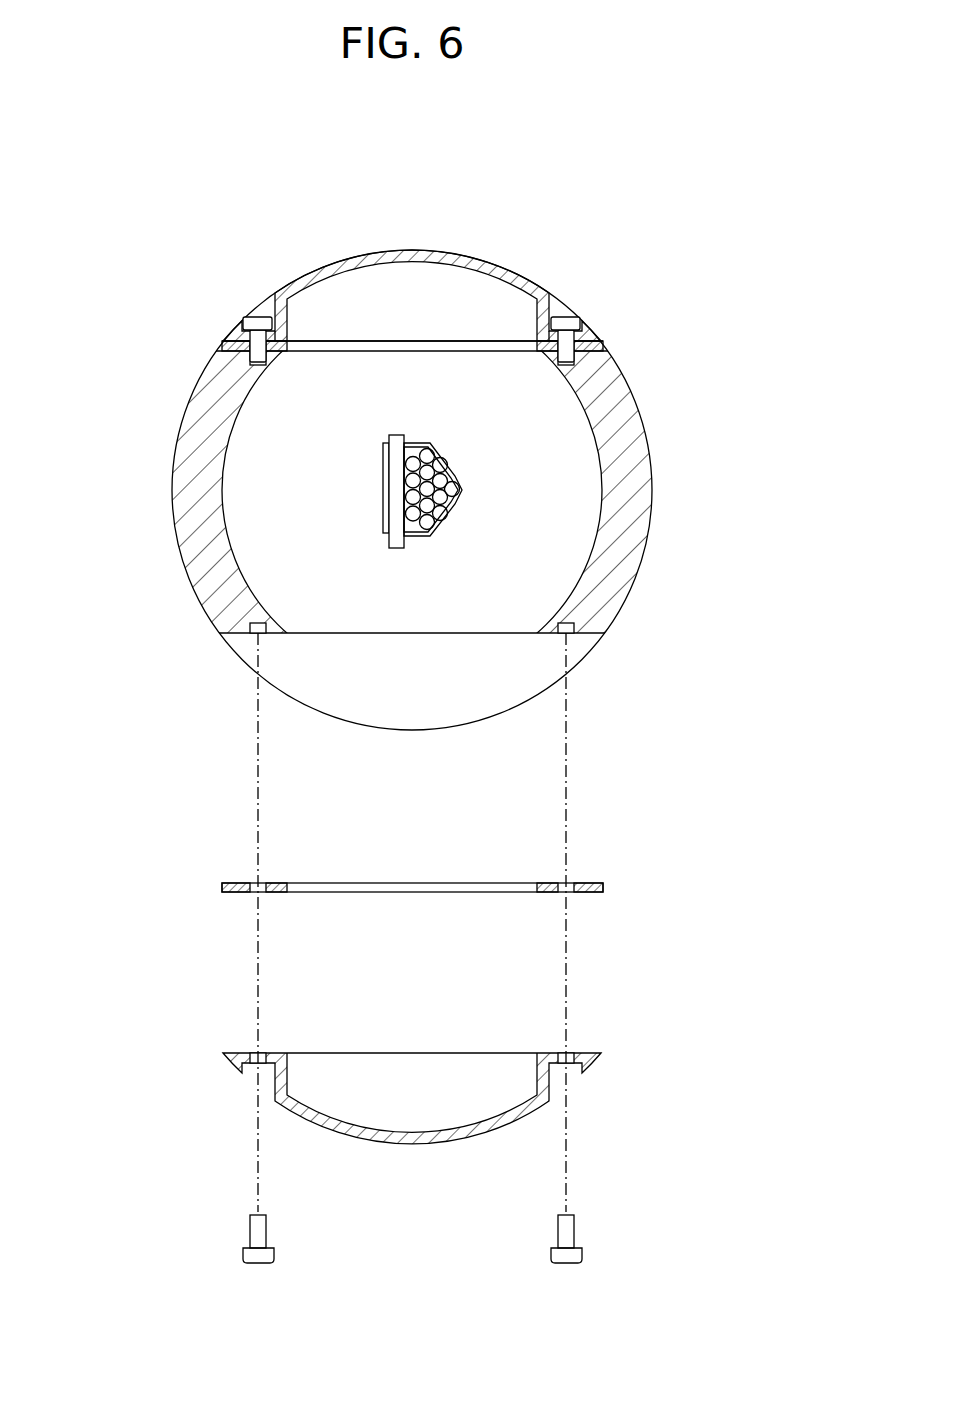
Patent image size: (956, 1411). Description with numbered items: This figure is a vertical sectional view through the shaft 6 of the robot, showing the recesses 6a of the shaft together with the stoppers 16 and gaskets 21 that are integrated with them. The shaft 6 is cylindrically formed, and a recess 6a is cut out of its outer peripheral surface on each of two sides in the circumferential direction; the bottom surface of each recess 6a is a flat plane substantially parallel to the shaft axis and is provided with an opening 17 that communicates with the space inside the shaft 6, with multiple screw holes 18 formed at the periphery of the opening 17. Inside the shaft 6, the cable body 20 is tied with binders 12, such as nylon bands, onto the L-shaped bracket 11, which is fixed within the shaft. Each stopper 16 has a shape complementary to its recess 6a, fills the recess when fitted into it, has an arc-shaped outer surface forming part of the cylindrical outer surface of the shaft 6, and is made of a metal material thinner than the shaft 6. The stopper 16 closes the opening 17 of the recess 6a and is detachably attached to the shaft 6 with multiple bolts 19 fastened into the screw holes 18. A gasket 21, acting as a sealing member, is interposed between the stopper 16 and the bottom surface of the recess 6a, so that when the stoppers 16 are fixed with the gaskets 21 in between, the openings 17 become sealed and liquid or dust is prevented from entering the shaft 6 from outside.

The shaft 6 is at (170, 422).
The recess 6a is at (590, 340).
The bracket 11 is at (418, 519).
The binder 12 is at (462, 505).
The stopper 16 is at (398, 250).
The opening 17 is at (313, 340).
The screw hole 18 is at (255, 366).
The bolt 19 is at (257, 316).
The cable body 20 is at (389, 497).
The gasket 21 is at (478, 340).